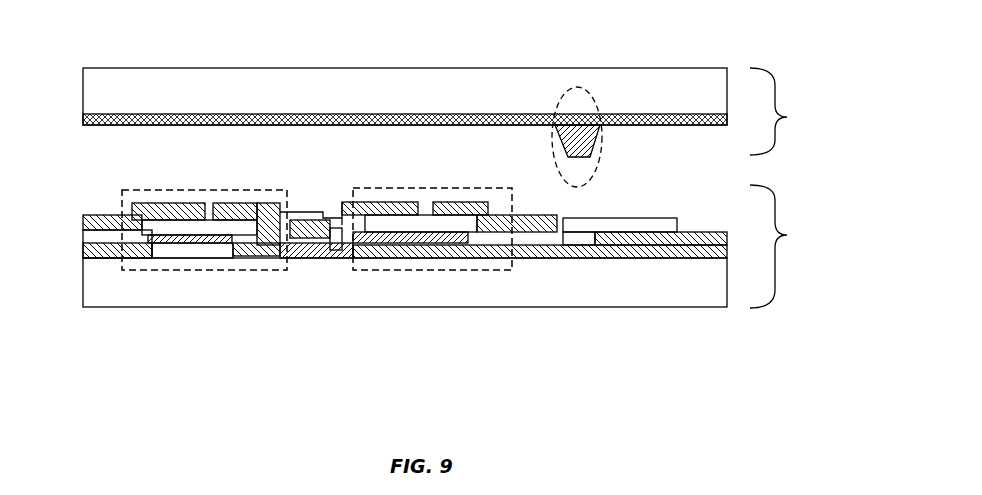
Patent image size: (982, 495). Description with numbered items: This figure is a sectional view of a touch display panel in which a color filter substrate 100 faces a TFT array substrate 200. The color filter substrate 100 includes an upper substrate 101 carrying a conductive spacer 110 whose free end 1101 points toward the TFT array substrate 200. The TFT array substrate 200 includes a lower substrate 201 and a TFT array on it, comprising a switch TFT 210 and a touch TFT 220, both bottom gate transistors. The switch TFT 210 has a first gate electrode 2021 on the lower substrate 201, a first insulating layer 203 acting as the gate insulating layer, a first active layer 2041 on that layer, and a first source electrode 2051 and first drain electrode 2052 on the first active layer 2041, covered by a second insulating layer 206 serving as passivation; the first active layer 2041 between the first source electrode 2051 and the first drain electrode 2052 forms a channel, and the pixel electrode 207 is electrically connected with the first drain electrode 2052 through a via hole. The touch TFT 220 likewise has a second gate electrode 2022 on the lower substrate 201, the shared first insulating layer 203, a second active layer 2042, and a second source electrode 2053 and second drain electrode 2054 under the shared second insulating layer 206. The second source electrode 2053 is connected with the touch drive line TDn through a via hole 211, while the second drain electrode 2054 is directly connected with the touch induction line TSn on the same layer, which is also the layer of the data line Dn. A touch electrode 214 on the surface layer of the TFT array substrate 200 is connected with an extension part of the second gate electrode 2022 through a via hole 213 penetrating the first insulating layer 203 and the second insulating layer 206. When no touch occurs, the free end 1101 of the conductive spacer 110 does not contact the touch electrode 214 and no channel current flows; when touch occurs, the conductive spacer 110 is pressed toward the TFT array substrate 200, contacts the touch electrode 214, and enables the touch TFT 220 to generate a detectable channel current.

The color filter substrate 100 is at (454, 101).
The upper substrate 101 is at (652, 87).
The conductive spacer 110 is at (556, 117).
The free end 1101 is at (598, 162).
The TFT array substrate 200 is at (428, 278).
The lower substrate 201 is at (602, 293).
The first insulating layer 203 is at (90, 252).
The second insulating layer 206 is at (90, 215).
The pixel electrode 207 is at (300, 246).
The switch TFT 210 is at (118, 262).
The via hole 211 is at (342, 208).
The via hole 213 is at (590, 240).
The touch electrode 214 is at (640, 232).
The touch TFT 220 is at (403, 272).
The first gate electrode 2021 is at (206, 243).
The second gate electrode 2022 is at (438, 245).
The first active layer 2041 is at (157, 245).
The second active layer 2042 is at (385, 258).
The first source electrode 2051 is at (140, 238).
The first drain electrode 2052 is at (262, 250).
The second source electrode 2053 is at (357, 262).
The second drain electrode 2054 is at (484, 233).
The data line Dn is at (86, 247).
The touch drive line TDn is at (338, 262).
The touch induction line TSn is at (543, 258).